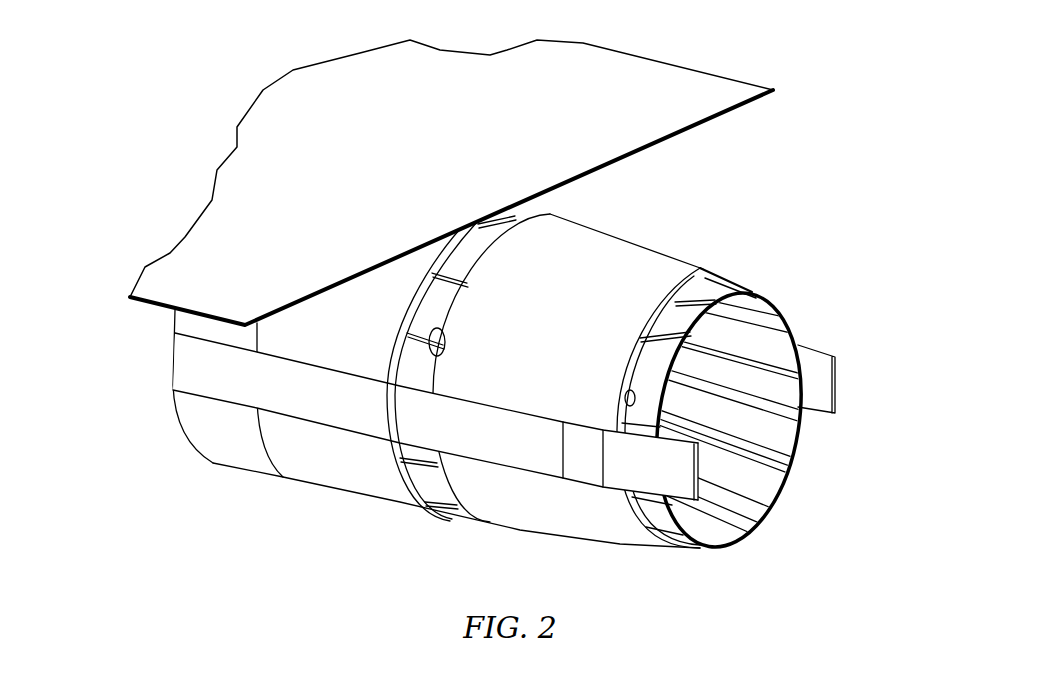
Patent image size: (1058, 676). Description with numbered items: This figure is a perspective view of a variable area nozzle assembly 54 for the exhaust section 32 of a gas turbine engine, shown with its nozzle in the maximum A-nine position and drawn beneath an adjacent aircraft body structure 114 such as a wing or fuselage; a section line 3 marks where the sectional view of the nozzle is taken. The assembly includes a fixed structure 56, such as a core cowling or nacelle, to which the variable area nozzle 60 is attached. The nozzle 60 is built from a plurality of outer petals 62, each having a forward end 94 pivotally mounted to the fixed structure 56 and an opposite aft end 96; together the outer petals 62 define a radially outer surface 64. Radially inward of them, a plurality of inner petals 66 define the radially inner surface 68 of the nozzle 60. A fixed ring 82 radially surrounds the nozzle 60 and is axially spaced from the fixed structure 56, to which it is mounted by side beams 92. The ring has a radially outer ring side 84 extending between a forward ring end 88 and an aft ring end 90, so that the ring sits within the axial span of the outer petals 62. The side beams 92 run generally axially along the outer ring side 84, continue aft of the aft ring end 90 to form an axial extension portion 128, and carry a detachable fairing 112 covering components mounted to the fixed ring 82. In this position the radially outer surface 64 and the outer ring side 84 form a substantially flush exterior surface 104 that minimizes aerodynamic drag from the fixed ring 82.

The aircraft body structure 114 is at (680, 90).
The variable area nozzle assembly 54 is at (818, 182).
The section line 3 is at (140, 262).
The forward end 94 is at (464, 246).
The radially outer ring side 84 is at (572, 243).
The exterior surface 104 is at (629, 227).
The outer petals 62 is at (675, 312).
The radially inner surface 68 is at (760, 340).
The axial extension portion 128 is at (822, 377).
The radially outer surface 64 is at (650, 365).
The aft ring end 90 is at (627, 391).
The forward ring end 88 is at (440, 330).
The inner petals 66 is at (754, 484).
The variable area nozzle 60 is at (797, 519).
The exhaust section 32 is at (226, 501).
The fixed structure 56 is at (348, 470).
The side beams 92 is at (418, 422).
The detachable fairing 112 is at (508, 443).
The fixed ring 82 is at (586, 518).
The aft end 96 is at (738, 550).